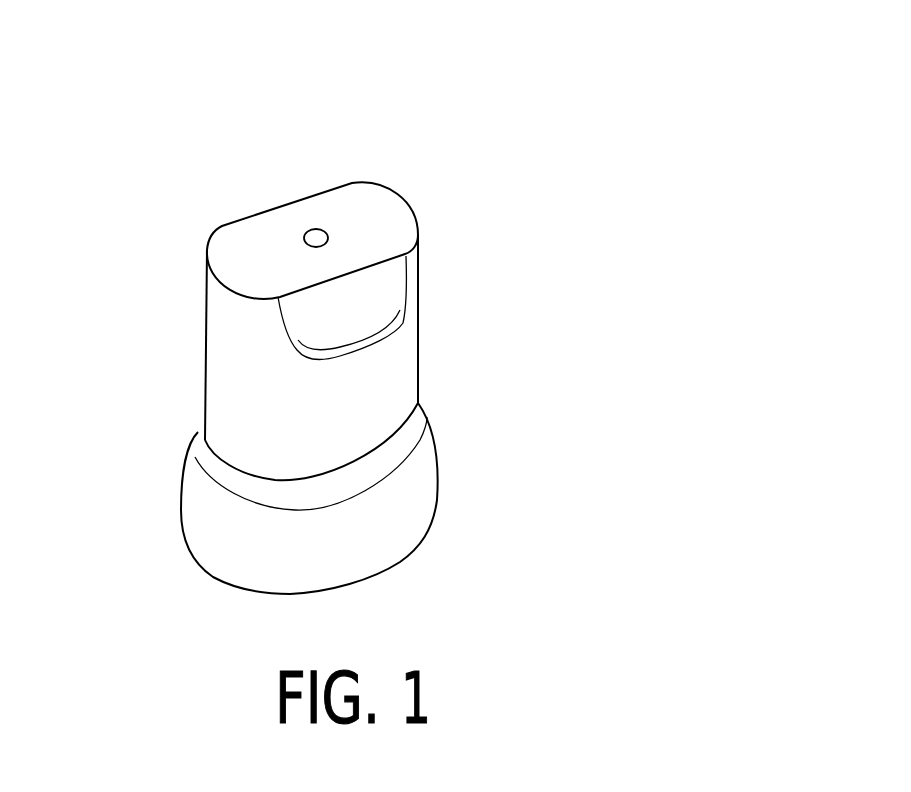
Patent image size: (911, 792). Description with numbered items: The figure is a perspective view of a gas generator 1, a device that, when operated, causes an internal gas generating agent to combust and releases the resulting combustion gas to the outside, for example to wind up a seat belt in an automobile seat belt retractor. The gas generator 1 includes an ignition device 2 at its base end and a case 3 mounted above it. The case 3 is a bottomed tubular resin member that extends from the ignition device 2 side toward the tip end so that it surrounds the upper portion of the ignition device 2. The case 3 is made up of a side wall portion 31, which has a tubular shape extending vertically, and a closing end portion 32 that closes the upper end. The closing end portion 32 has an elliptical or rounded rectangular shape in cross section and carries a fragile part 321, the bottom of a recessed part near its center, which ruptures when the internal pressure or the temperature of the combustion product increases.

The gas generator 1 is at (115, 94).
The ignition device 2 is at (363, 533).
The case 3 is at (638, 266).
The side wall portion 31 is at (365, 377).
The closing end portion 32 is at (363, 223).
The fragile part 321 is at (315, 228).